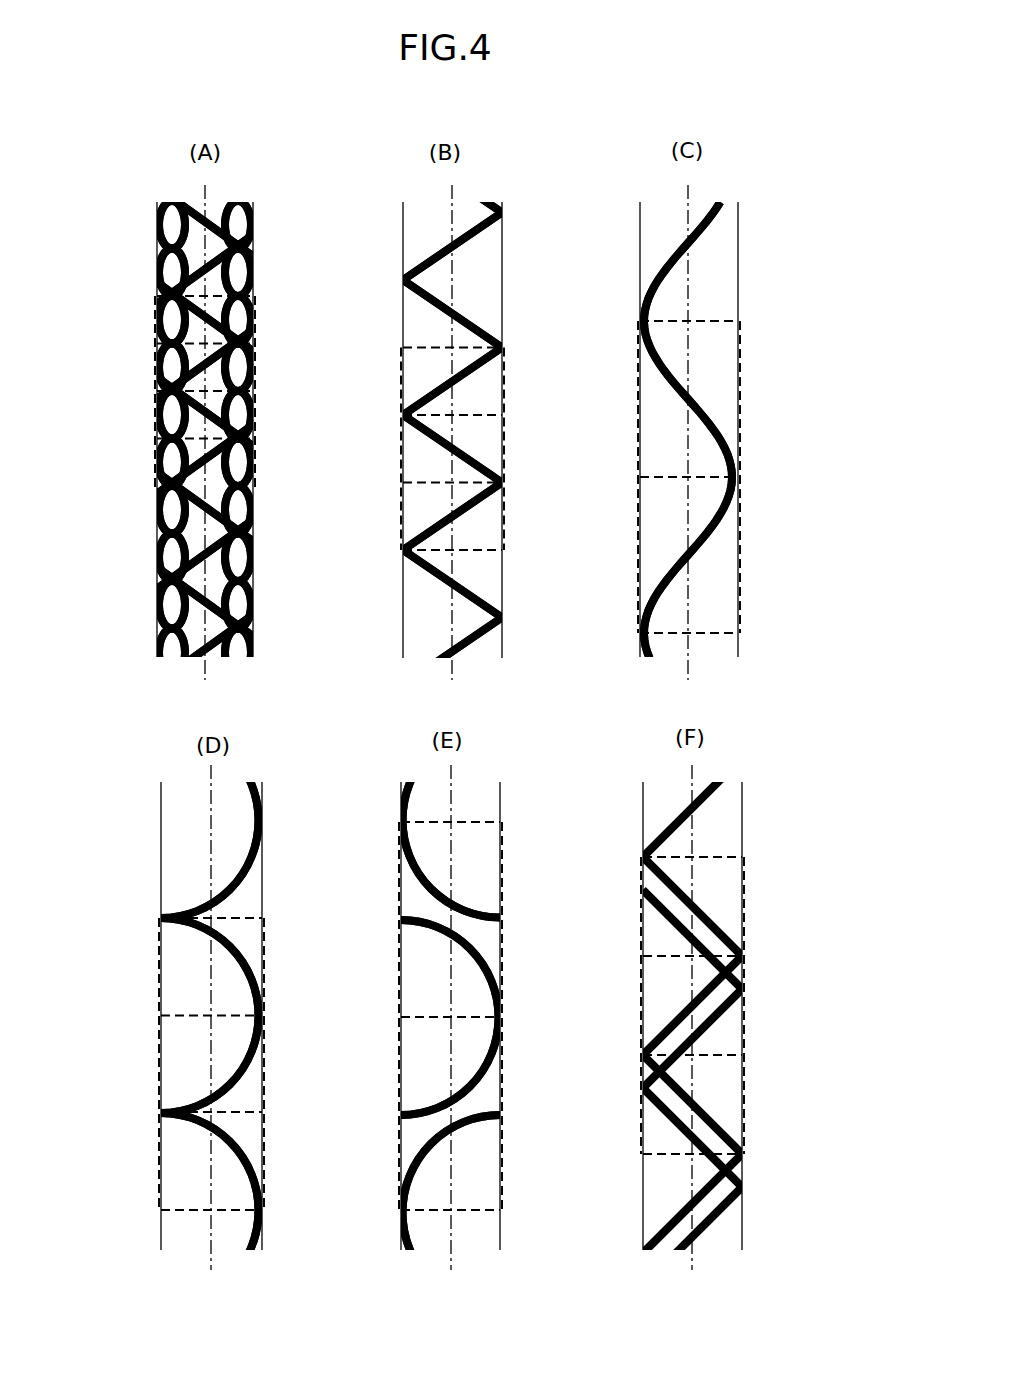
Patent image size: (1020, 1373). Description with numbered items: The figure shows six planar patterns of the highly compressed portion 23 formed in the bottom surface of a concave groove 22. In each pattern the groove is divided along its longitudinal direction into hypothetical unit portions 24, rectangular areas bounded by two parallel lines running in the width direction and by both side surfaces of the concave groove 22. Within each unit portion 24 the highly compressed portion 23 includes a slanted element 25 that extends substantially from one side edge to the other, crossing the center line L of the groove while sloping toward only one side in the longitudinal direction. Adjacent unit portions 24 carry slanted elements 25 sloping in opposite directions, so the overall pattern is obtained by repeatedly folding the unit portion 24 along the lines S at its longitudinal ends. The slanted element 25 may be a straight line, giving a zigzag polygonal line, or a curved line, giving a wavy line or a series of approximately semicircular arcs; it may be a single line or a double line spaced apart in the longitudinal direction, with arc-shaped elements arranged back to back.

The concave groove 22 is at (257, 537).
The highly compressed portion 23 is at (250, 251).
The unit portion 24 is at (153, 307).
The slanted element 25 is at (190, 268).
The line S is at (263, 343).
The center line L is at (205, 670).